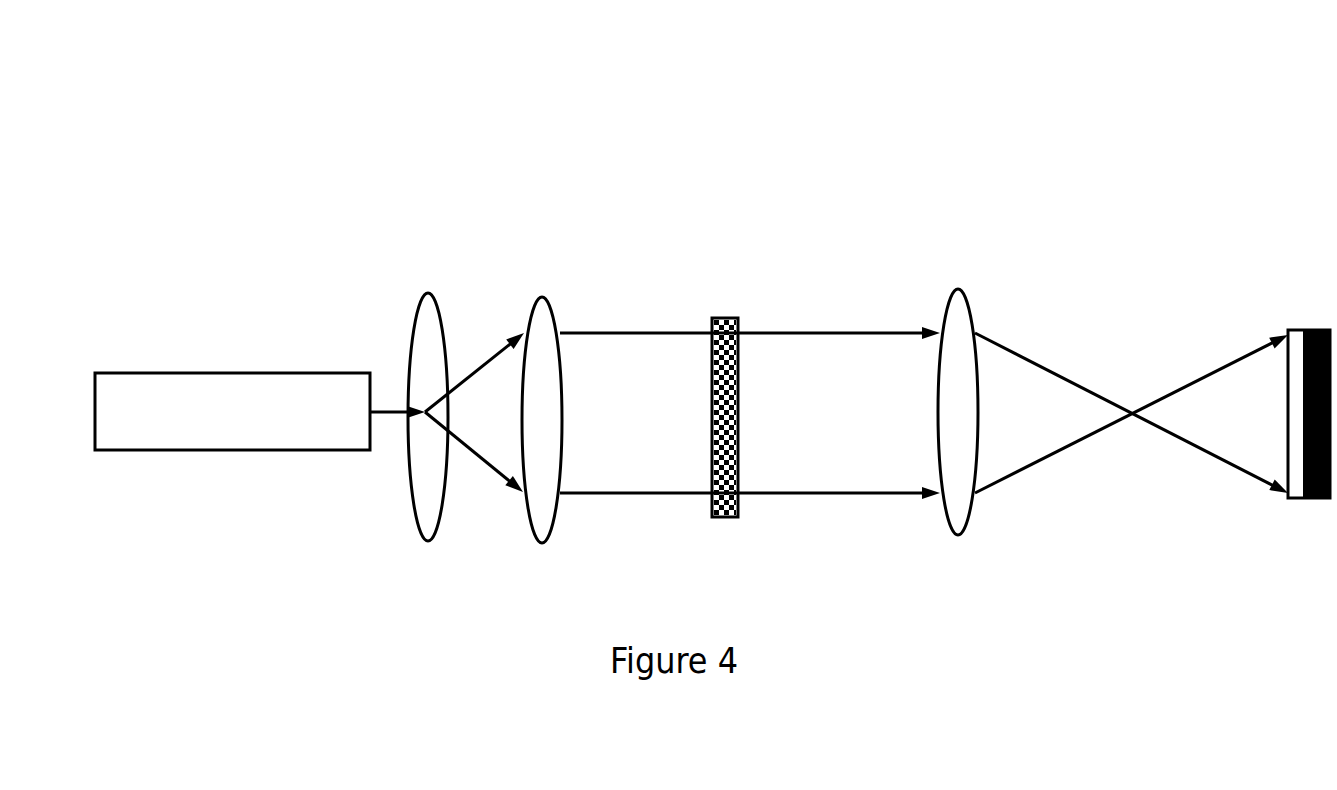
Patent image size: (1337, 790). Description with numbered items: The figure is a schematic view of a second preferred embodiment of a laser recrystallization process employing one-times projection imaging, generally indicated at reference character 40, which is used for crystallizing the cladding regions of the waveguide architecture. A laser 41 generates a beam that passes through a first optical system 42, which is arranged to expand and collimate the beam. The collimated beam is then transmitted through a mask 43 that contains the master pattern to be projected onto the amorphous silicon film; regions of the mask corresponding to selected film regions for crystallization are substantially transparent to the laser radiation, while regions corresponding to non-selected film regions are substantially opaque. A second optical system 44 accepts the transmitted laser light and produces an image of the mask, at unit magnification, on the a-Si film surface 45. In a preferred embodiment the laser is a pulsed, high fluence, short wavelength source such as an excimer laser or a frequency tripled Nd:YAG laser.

The laser recrystallization process employing 1× projection imaging 40 is at (812, 100).
The laser 41 is at (162, 373).
The first optical system 42 is at (572, 281).
The mask 43 is at (723, 318).
The second optical system 44 is at (957, 287).
The a-Si film surface 45 is at (1303, 330).